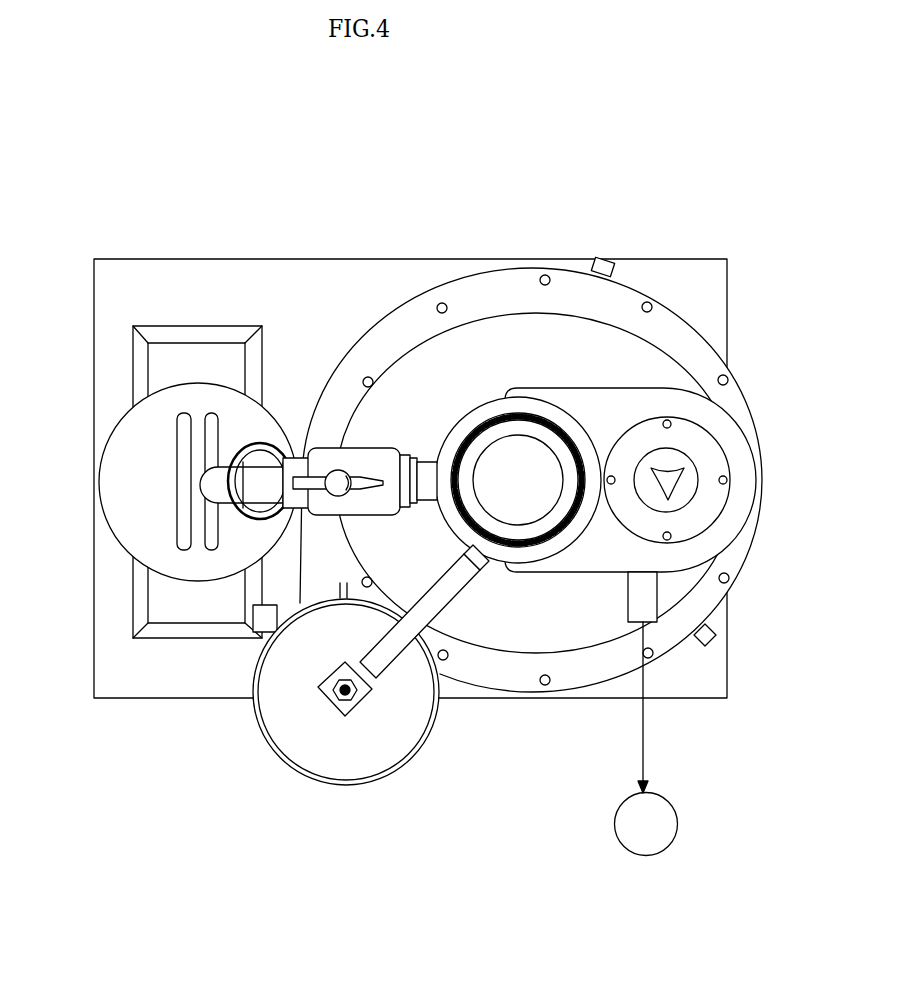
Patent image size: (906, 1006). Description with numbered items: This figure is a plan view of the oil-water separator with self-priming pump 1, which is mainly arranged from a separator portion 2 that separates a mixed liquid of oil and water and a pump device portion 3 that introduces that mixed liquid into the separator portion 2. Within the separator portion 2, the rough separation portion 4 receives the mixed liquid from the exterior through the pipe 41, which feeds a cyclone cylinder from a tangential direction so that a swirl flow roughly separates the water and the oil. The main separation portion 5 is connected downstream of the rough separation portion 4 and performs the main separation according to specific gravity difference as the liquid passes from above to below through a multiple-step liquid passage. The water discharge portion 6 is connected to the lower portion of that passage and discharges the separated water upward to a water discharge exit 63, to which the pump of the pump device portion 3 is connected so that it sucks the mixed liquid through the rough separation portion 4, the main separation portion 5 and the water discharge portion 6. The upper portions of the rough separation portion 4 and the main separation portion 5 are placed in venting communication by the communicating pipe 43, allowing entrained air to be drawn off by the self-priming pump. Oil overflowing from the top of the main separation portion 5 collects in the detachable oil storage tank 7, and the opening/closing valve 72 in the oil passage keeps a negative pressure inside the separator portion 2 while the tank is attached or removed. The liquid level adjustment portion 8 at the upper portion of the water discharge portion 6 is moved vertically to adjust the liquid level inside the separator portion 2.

The oil-water separator with self-priming pump 1 is at (759, 192).
The separator portion 2 is at (104, 218).
The pump device portion 3 is at (676, 792).
The rough separation portion 4 is at (372, 765).
The main separation portion 5 is at (647, 358).
The water discharge portion 6 is at (742, 510).
The oil storage tank 7 is at (115, 479).
The liquid level adjustment portion 8 is at (678, 472).
The pipe 41 is at (262, 611).
The communicating pipe 43 is at (390, 647).
The water discharge exit 63 is at (648, 600).
The opening/closing valve 72 is at (340, 482).